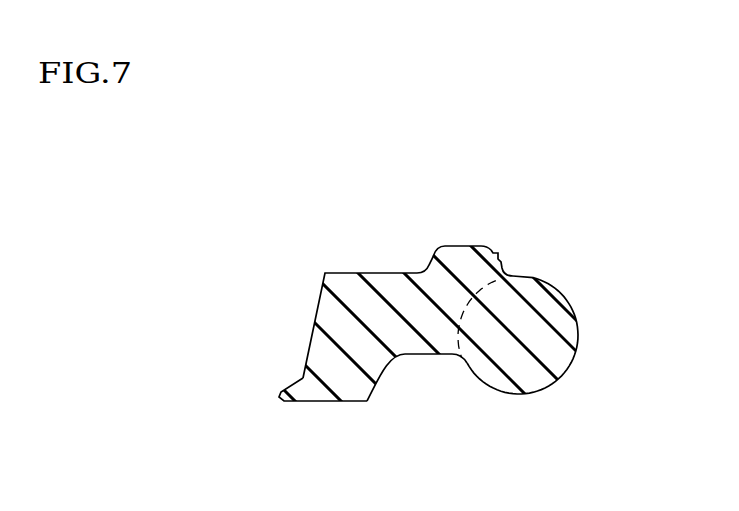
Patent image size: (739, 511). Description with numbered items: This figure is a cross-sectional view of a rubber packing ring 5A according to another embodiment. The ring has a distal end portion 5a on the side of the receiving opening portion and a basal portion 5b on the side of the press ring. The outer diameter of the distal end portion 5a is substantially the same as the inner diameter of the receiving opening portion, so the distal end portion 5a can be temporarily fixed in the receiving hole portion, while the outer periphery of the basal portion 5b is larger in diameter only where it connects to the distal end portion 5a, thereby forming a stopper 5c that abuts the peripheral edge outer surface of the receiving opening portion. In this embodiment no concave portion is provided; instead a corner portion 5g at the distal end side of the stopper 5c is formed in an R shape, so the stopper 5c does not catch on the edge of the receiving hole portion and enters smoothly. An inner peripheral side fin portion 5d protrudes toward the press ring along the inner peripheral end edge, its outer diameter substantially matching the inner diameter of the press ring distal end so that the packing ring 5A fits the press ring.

The packing ring 5A is at (385, 272).
The distal end portion 5a is at (538, 338).
The basal portion 5b is at (403, 338).
The stopper 5c is at (468, 264).
The inner peripheral side fin portion 5d is at (284, 403).
The corner portion 5g is at (499, 256).